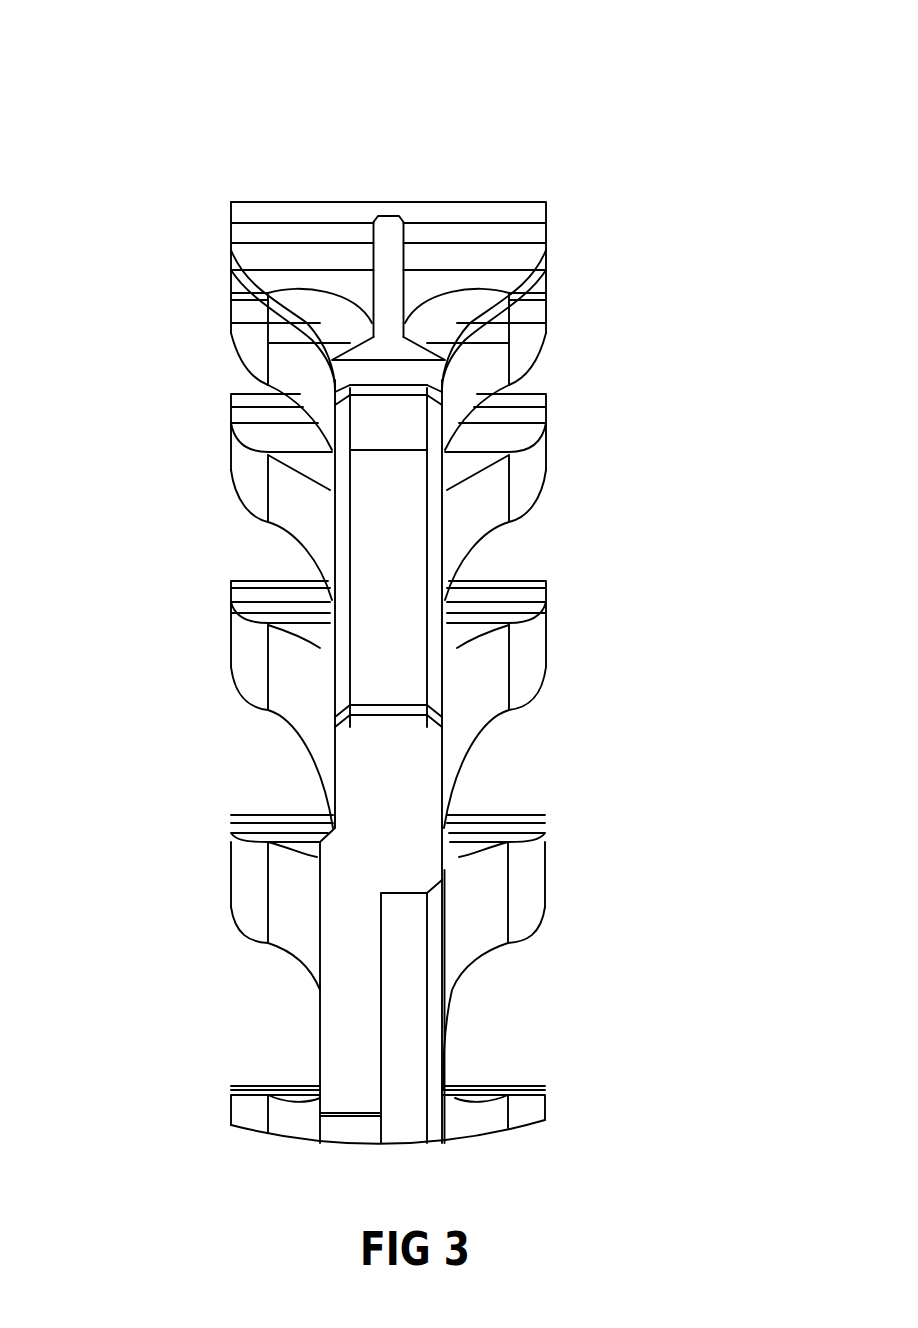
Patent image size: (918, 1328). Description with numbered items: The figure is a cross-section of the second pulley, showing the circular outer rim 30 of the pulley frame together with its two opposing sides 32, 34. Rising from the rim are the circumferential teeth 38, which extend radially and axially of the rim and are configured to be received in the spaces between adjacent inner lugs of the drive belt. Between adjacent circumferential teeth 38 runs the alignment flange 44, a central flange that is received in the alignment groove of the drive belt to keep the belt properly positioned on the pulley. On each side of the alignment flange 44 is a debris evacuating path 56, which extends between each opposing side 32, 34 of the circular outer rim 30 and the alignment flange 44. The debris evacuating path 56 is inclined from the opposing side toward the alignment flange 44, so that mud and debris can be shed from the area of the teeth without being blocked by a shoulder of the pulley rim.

The circular outer rim 30 is at (403, 762).
The opposing side 32 is at (336, 537).
The opposing side 34 is at (440, 537).
The circumferential tooth 38 is at (479, 245).
The alignment flange 44 is at (385, 265).
The debris evacuating path 56 is at (260, 304).